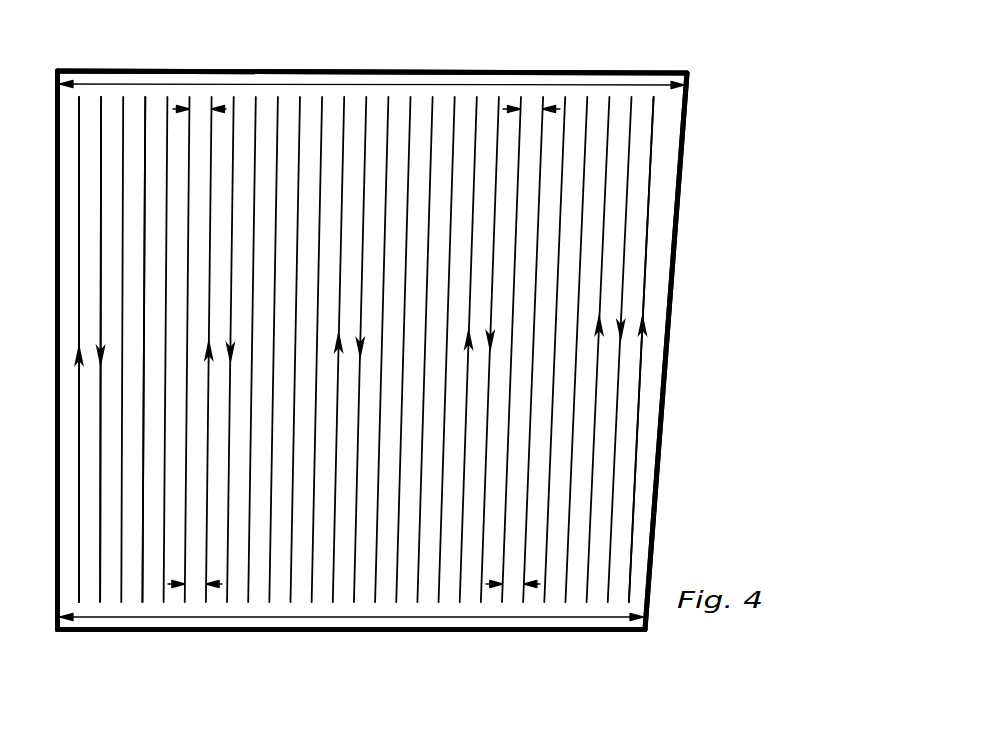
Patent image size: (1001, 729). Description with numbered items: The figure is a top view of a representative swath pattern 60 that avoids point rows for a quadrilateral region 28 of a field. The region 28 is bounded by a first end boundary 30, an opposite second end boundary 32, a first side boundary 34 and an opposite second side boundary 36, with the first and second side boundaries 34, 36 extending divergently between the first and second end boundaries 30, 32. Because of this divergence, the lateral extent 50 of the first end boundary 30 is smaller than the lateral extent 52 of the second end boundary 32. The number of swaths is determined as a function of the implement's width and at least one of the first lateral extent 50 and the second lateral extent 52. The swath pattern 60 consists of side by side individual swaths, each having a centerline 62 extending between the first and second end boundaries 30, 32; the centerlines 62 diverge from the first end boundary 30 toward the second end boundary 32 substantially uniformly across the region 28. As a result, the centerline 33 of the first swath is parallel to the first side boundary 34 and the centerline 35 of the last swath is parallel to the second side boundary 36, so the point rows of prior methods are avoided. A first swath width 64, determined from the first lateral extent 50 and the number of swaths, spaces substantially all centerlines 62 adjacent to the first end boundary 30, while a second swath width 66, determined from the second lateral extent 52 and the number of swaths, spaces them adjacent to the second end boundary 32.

The quadrilateral region 28 is at (669, 40).
The first end boundary 30 is at (99, 636).
The second end boundary 32 is at (308, 62).
The centerline of the first swath 33 is at (80, 232).
The first side boundary 34 is at (50, 277).
The centerline of the last swath 35 is at (649, 232).
The second side boundary 36 is at (686, 292).
The lateral extent of first end boundary 50 is at (305, 618).
The lateral extent of second end boundary 52 is at (424, 85).
The swath pattern 60 is at (574, 192).
The centerlines 62 is at (142, 477).
The first swath width 64 is at (193, 585).
The second swath width 66 is at (196, 108).